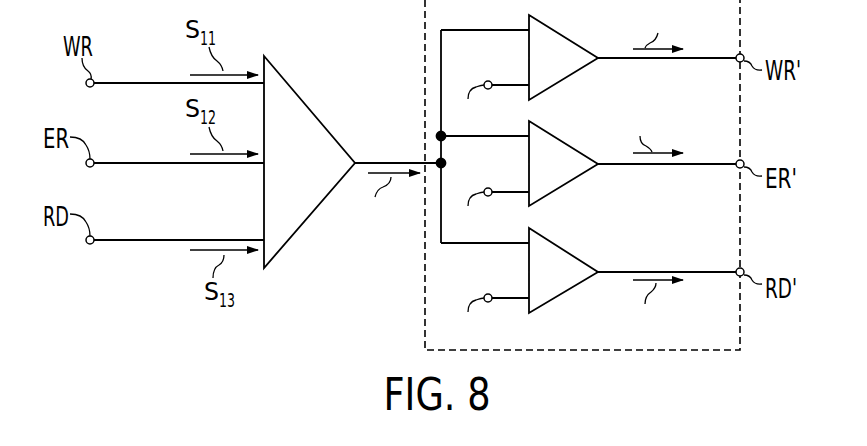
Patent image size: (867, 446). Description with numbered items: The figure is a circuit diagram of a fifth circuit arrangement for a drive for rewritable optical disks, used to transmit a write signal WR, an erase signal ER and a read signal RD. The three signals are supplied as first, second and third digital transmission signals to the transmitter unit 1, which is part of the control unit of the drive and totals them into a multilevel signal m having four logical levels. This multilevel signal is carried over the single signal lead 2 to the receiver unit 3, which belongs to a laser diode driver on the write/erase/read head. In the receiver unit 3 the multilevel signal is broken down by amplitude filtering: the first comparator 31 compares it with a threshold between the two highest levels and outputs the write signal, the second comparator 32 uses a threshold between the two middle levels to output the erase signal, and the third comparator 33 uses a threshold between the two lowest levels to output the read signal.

The transmitter unit 1 is at (300, 99).
The signal lead 2 is at (371, 162).
The receiver unit 3 is at (422, 328).
The first comparator 31 is at (575, 72).
The second comparator 32 is at (575, 179).
The third comparator 33 is at (575, 287).